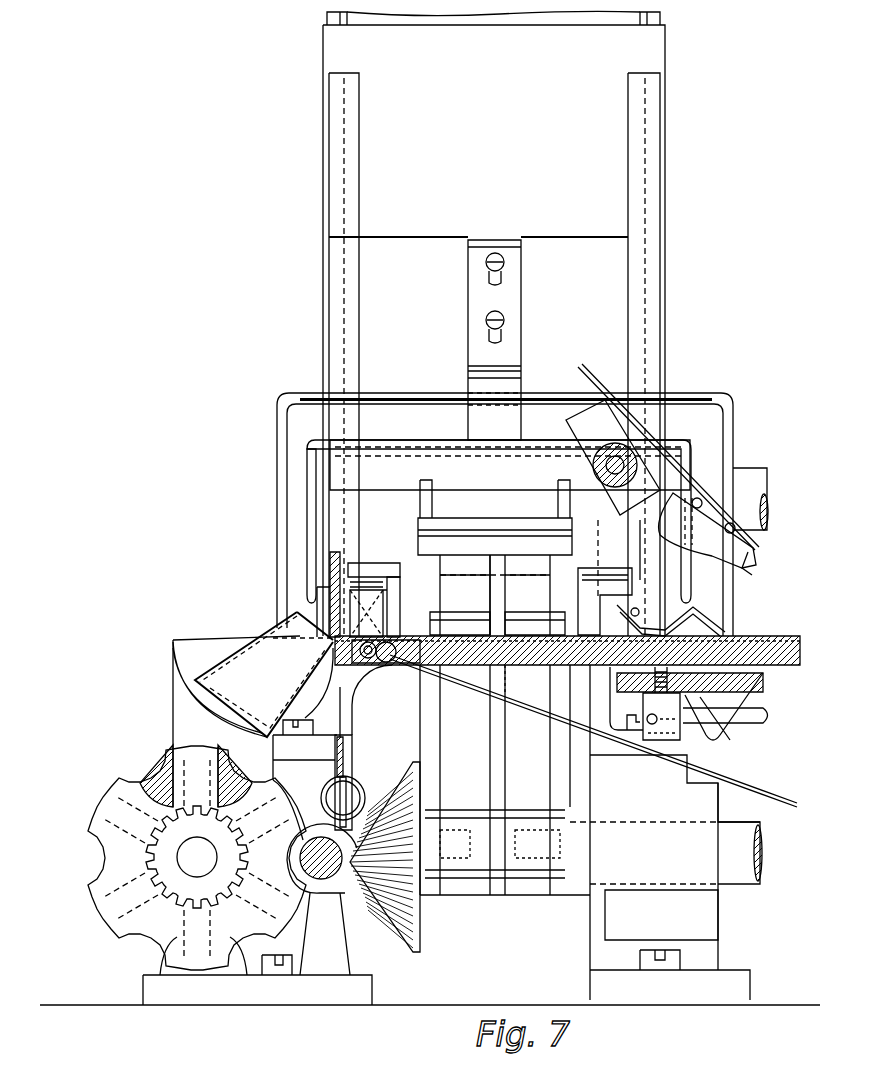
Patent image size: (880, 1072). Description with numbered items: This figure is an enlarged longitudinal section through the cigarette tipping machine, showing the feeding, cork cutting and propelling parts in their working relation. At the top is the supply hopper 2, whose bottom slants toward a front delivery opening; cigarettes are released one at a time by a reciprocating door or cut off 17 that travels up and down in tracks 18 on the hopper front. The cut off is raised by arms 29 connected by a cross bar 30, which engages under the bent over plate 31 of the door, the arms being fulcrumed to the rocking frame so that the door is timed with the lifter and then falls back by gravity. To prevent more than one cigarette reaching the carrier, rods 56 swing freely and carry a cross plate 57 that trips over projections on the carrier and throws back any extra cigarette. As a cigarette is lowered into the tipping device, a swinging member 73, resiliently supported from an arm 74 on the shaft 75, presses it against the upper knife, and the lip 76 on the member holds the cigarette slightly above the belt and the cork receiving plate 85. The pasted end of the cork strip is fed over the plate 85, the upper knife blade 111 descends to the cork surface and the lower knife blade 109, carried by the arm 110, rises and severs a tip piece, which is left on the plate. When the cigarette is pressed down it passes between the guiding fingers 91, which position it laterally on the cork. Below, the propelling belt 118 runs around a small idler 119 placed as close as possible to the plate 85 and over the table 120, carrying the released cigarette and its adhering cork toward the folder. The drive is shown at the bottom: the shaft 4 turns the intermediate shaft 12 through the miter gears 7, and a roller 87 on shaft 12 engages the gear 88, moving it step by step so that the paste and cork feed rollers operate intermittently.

The supply hopper 2 is at (494, 323).
The shaft 4 is at (763, 856).
The miter gears 7 is at (420, 920).
The intermediate shaft 12 is at (310, 866).
The reciprocating door or cut off 17 is at (424, 246).
The tracks 18 is at (360, 298).
The arms 29 is at (292, 440).
The cross bar 30 is at (406, 400).
The bent over plate 31 is at (521, 380).
The rods 56 is at (318, 472).
The cross plate 57 is at (392, 490).
The swinging member 73 is at (707, 530).
The arm 74 is at (612, 372).
The shaft 75 is at (592, 463).
The lip 76 is at (745, 570).
The plate 85 is at (352, 665).
The roller 87 is at (270, 790).
The gear 88 is at (223, 773).
The guiding fingers 91 is at (400, 588).
The lower knife blade 109 is at (342, 738).
The arm 110 is at (353, 758).
The upper knife blade 111 is at (342, 563).
The belt 118 is at (450, 640).
The small idler 119 is at (393, 665).
The table 120 is at (516, 666).